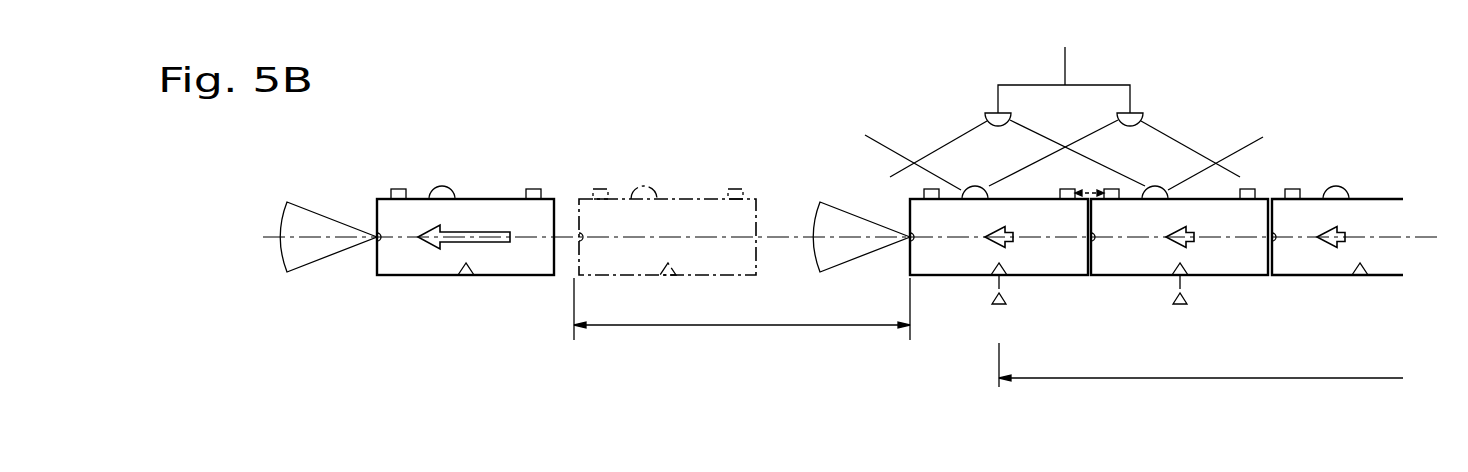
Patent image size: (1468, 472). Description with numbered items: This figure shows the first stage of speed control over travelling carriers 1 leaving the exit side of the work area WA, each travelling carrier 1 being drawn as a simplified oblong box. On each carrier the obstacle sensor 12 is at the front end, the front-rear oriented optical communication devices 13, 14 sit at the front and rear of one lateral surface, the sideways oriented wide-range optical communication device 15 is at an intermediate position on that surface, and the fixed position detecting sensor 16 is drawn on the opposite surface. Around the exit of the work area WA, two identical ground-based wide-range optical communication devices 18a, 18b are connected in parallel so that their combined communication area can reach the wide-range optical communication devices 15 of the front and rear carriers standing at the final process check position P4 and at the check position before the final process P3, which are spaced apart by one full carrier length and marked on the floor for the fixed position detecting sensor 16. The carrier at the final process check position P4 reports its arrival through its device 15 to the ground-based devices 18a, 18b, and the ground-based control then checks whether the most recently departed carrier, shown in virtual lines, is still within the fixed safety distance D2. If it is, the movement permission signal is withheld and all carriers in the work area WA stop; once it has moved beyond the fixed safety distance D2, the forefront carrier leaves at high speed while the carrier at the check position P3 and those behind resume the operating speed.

The travelling carrier 1 is at (413, 278).
The obstacle sensor 12 is at (377, 257).
The front-rear oriented optical communication device 13 is at (396, 189).
The front-rear oriented optical communication device 14 is at (533, 189).
The sideways oriented wide-range optical communication device 15 is at (443, 186).
The fixed position detecting sensor 16 is at (466, 268).
The ground-based wide-range optical communication device 18a is at (992, 112).
The ground-based wide-range optical communication device 18b is at (1138, 112).
The check position before the final process P3 is at (1178, 306).
The final process check position P4 is at (995, 306).
The fixed safety distance D2 is at (742, 309).
The work area WA is at (1201, 365).